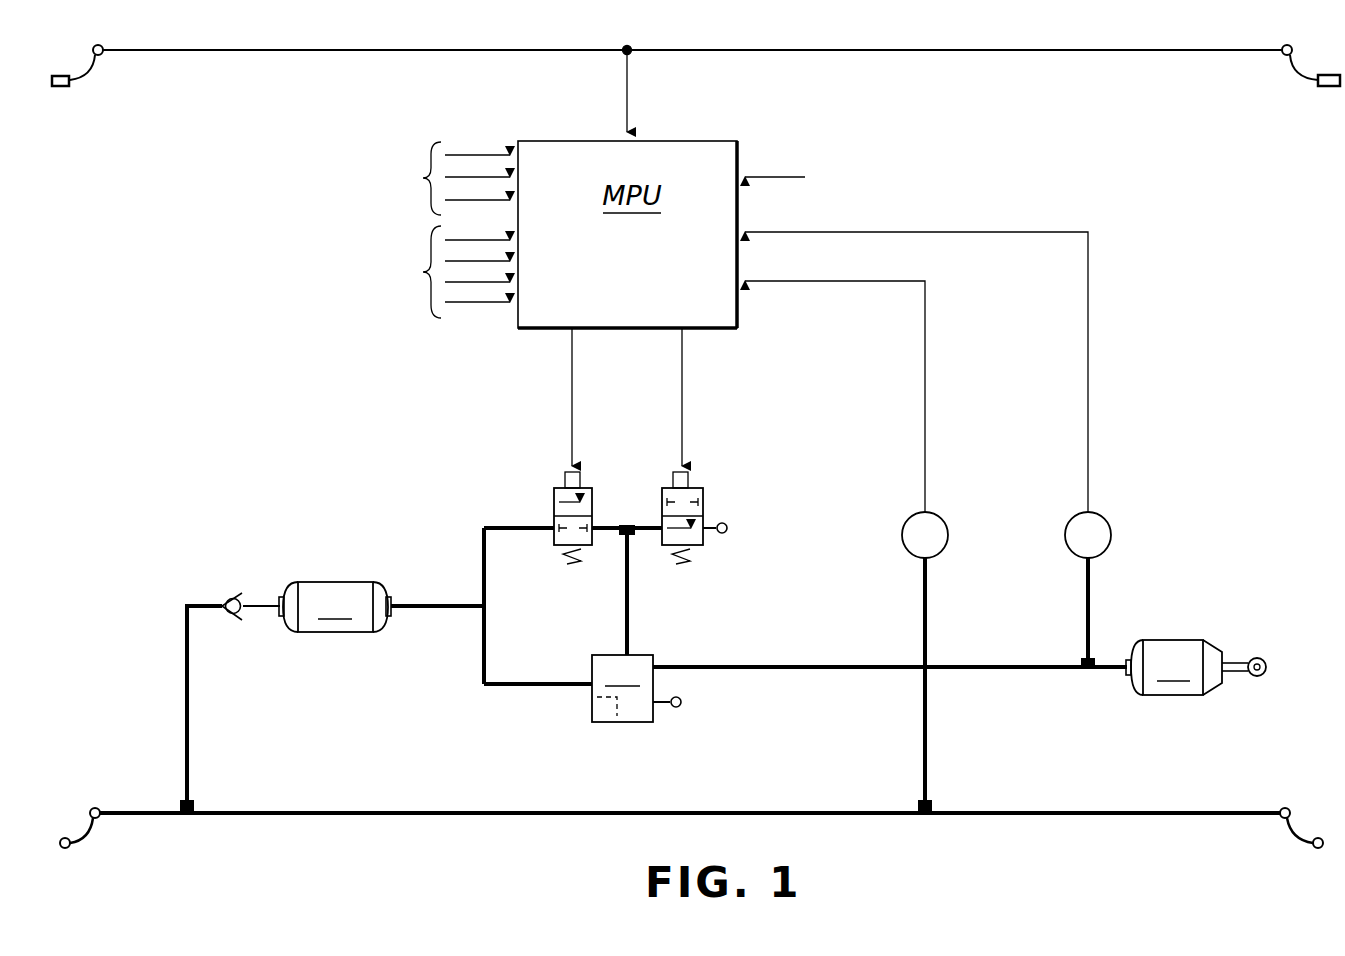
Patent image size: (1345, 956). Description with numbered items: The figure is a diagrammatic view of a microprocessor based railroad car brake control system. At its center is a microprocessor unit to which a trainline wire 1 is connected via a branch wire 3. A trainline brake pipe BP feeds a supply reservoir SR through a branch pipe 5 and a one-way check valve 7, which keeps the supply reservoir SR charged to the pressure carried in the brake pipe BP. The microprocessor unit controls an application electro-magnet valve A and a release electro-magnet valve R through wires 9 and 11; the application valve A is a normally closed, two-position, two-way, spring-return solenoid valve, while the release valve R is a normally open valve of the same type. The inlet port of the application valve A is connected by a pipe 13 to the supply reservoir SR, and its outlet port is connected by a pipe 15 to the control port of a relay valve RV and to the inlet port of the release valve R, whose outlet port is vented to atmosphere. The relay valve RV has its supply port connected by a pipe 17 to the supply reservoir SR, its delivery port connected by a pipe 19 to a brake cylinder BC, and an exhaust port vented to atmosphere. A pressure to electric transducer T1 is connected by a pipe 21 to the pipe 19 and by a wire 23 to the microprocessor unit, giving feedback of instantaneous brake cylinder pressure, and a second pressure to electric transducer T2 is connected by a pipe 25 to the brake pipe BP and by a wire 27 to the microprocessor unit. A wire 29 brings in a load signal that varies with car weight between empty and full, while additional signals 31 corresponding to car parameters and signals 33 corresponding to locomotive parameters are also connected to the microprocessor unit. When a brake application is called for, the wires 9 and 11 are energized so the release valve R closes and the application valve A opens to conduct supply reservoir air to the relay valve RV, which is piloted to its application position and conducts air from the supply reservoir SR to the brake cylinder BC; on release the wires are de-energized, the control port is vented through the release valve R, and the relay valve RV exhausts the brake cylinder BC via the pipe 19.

The trainline wire 1 is at (913, 50).
The branch wire 3 is at (627, 95).
The branch pipe 5 is at (190, 708).
The one-way check valve 7 is at (230, 598).
The wire 9 is at (572, 385).
The wire 11 is at (682, 382).
The pipe 13 is at (483, 562).
The pipe 15 is at (628, 600).
The pipe 17 is at (483, 657).
The pipe 19 is at (985, 670).
The pipe 21 is at (1087, 603).
The wire 23 is at (925, 330).
The pipe 25 is at (924, 603).
The wire 27 is at (1010, 232).
The wire 29 is at (783, 177).
The signals 31 is at (436, 148).
The signals 33 is at (432, 304).
The application electro-magnet valve A is at (550, 479).
The release electro-magnet valve R is at (712, 478).
The supply reservoir SR is at (363, 607).
The relay valve RV is at (636, 688).
The brake cylinder BC is at (1196, 667).
The pressure to electric transducer T1 is at (1088, 535).
The pressure to electric transducer T2 is at (925, 535).
The trainline brake pipe BP is at (475, 812).